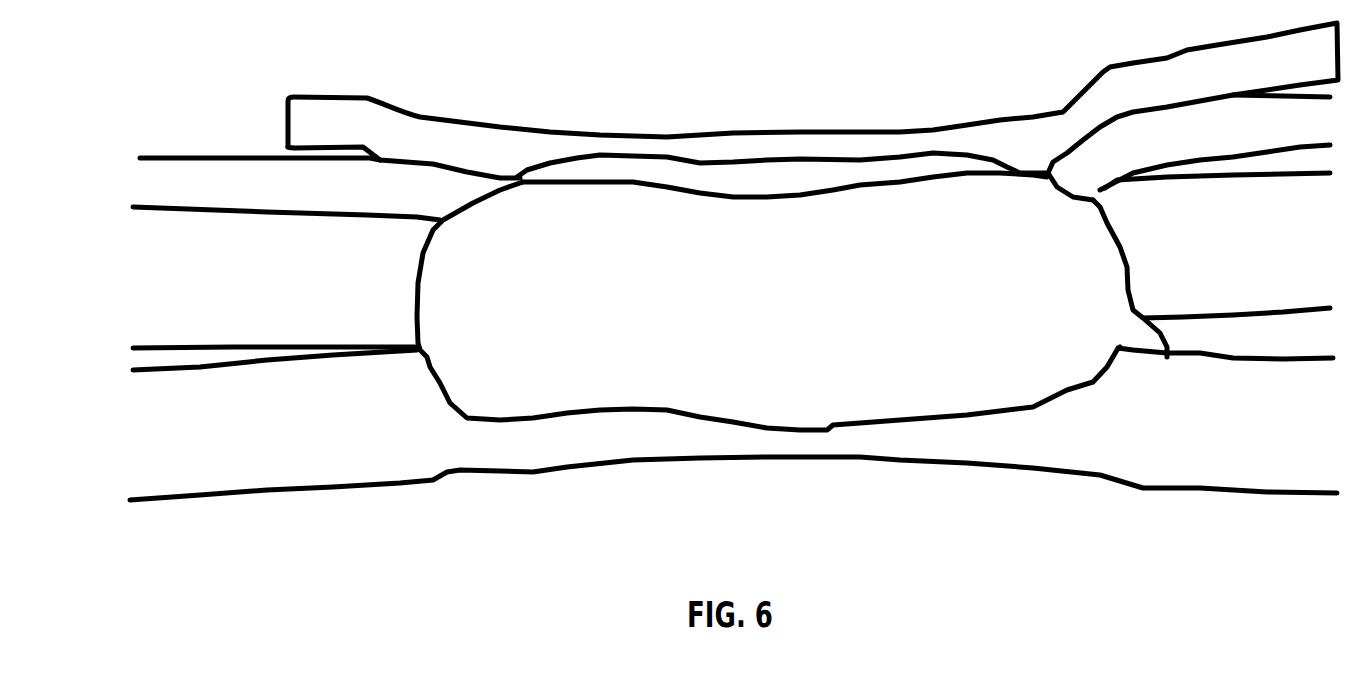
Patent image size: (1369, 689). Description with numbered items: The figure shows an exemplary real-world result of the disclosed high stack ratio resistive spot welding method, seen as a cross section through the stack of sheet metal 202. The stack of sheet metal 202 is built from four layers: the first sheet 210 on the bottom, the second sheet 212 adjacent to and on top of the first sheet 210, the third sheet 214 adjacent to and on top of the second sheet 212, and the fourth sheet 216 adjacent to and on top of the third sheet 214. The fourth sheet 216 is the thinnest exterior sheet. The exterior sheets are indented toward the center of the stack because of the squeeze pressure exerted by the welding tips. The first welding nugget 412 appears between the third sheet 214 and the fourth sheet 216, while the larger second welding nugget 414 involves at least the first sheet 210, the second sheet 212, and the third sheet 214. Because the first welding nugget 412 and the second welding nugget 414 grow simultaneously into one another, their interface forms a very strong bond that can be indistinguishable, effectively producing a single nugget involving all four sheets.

The stack of sheet metal 202 is at (367, 538).
The first sheet 210 is at (197, 422).
The second sheet 212 is at (200, 268).
The third sheet 214 is at (185, 185).
The fourth sheet 216 is at (327, 125).
The first welding nugget 412 is at (642, 168).
The second welding nugget 414 is at (630, 358).